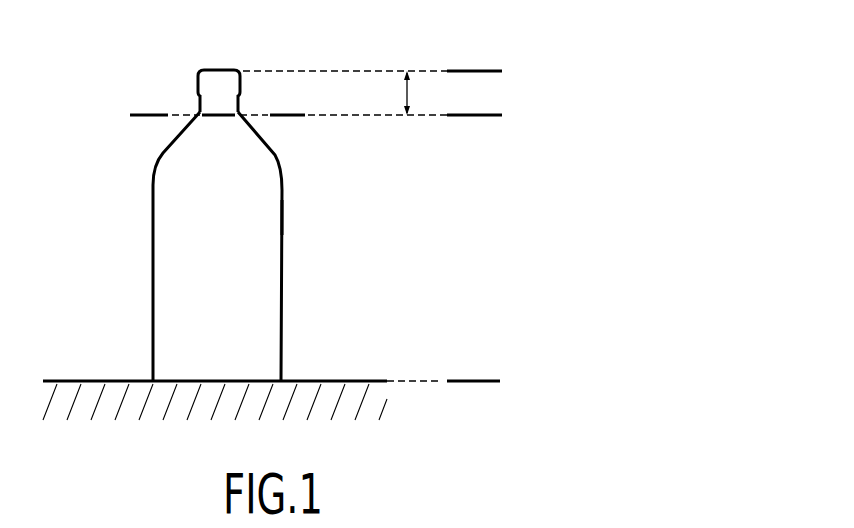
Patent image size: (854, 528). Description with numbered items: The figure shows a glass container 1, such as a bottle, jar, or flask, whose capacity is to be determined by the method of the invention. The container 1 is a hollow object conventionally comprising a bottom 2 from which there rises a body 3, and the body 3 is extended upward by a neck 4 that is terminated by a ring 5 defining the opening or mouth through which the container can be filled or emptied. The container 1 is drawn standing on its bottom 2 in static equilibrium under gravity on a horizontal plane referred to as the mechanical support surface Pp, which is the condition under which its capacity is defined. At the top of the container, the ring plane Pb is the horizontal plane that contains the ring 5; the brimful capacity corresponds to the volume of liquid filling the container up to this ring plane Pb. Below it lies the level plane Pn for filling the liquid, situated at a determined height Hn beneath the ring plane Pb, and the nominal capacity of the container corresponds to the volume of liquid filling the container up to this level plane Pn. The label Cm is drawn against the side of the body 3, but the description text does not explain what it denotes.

The container 1 is at (190, 201).
The bottom 2 is at (210, 383).
The body 3 is at (282, 286).
The neck 4 is at (240, 96).
The ring 5 is at (209, 70).
The main body portion Cm is at (258, 215).
The determined height Hn is at (426, 93).
The ring plane Pb is at (477, 71).
The level plane Pn is at (477, 115).
The mechanical support surface Pp is at (473, 381).